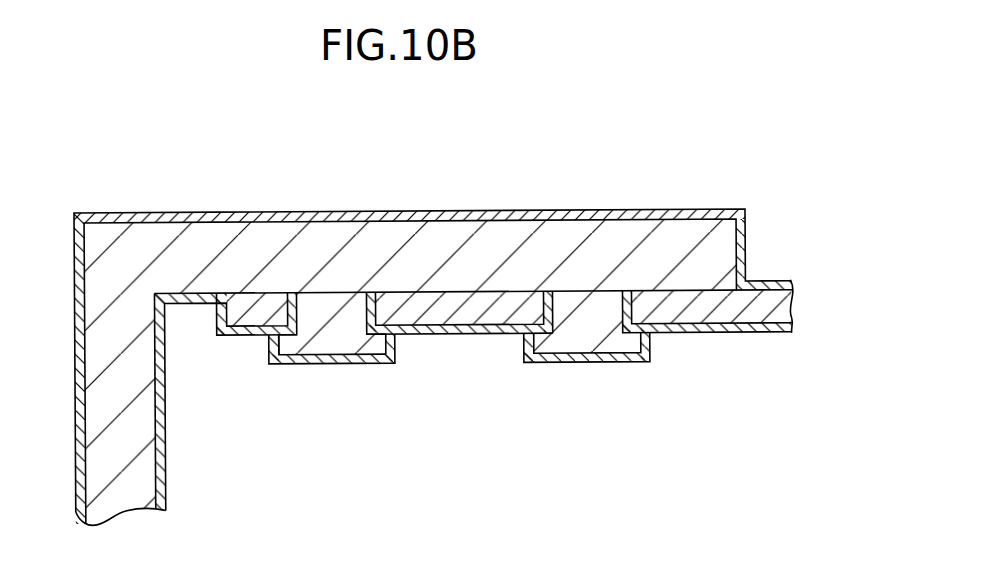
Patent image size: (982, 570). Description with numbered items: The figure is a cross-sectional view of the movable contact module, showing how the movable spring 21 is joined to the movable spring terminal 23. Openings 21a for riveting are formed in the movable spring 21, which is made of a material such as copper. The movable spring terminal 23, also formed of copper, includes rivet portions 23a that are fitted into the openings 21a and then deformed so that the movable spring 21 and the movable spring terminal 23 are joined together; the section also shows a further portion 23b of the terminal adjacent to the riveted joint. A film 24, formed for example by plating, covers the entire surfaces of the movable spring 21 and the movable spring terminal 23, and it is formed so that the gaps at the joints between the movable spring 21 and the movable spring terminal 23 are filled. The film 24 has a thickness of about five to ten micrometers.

The movable spring 21 is at (708, 312).
The openings for riveting 21a is at (525, 318).
The movable spring terminal 23 is at (453, 250).
The rivet portions 23a is at (332, 316).
The protruding portion 23b is at (373, 343).
The film 24 is at (693, 211).